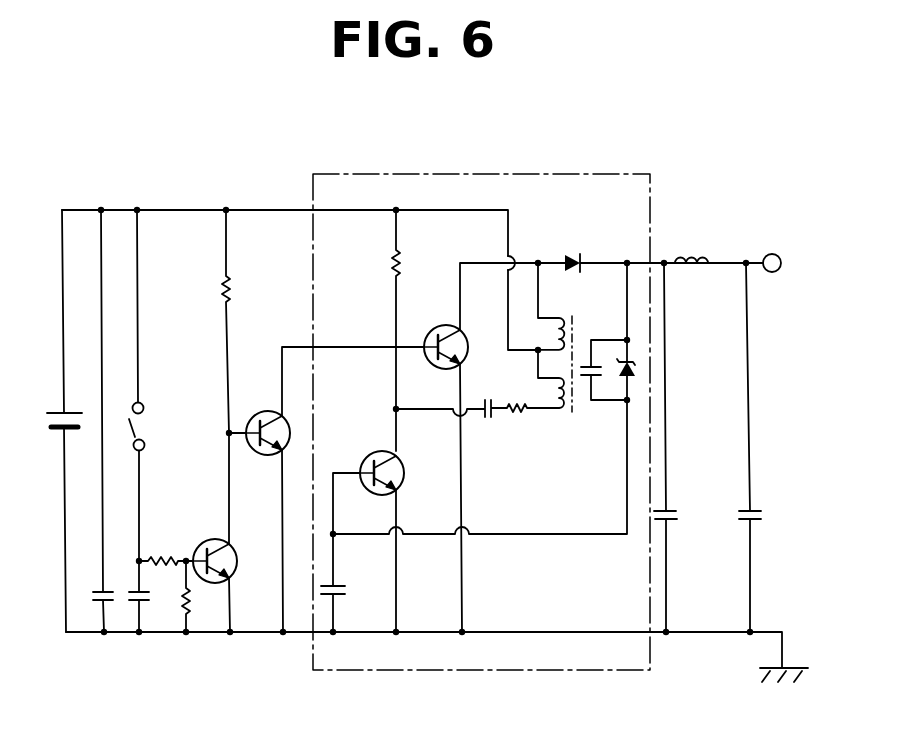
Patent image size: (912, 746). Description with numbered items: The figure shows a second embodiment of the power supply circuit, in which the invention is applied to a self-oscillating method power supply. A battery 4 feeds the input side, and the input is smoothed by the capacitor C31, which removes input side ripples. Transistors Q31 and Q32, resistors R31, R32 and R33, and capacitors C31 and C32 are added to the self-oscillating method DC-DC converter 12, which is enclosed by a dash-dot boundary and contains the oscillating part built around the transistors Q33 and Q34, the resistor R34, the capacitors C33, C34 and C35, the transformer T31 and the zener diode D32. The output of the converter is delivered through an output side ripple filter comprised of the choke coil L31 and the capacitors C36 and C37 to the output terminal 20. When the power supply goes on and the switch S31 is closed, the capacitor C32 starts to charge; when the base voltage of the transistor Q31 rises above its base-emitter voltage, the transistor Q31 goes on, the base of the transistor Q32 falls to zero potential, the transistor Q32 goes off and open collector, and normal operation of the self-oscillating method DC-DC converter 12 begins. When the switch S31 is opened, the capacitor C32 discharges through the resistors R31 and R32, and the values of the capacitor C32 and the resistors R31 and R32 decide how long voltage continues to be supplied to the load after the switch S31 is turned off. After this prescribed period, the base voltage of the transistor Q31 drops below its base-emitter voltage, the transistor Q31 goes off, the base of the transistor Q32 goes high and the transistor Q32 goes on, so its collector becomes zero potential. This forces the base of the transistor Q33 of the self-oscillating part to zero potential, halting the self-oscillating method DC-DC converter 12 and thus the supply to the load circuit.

The battery (power source Eo) 4 is at (57, 411).
The self-oscillating method DC-DC converter 12 is at (507, 174).
The output terminal 20 is at (778, 255).
The capacitor C31 is at (84, 441).
The capacitor C32 is at (135, 628).
The capacitor C33 is at (352, 583).
The capacitor C34 is at (477, 425).
The capacitor C35 is at (602, 387).
The capacitor C36 is at (685, 447).
The capacitor C37 is at (770, 447).
The resistor R31 is at (164, 547).
The resistor R32 is at (193, 616).
The resistor R33 is at (254, 321).
The resistor R34 is at (367, 309).
The transistor Q31 is at (195, 532).
The transistor Q32 is at (325, 489).
The transistor Q33 is at (478, 516).
The transistor Q34 is at (469, 447).
The switch S31 is at (162, 385).
The transformer T31 is at (566, 336).
The zener diode D32 is at (668, 333).
The choke coil L31 is at (693, 241).